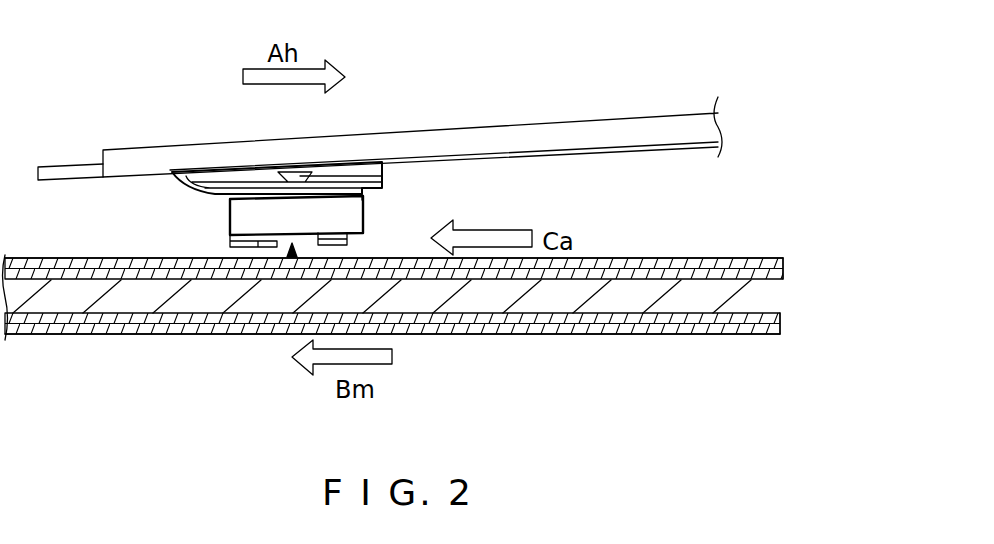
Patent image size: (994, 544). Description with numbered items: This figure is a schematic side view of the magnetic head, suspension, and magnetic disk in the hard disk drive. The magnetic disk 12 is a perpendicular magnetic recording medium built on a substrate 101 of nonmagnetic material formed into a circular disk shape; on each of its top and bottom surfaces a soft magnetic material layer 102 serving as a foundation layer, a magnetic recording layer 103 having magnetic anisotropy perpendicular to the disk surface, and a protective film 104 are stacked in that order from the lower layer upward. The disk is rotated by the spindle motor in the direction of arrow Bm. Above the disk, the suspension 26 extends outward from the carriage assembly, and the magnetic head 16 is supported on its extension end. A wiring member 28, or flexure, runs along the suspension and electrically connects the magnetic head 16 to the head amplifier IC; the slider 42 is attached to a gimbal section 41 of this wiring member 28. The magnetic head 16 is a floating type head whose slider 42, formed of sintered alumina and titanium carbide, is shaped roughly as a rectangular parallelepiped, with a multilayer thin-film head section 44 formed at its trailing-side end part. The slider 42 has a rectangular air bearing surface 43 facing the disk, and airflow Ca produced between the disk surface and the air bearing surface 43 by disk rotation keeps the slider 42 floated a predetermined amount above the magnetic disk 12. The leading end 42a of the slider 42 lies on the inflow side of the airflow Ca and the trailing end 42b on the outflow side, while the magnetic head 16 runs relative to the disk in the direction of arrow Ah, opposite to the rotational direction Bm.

The magnetic disk 12 is at (437, 282).
The magnetic head 16 is at (302, 238).
The suspension 26 is at (580, 120).
The wiring member (flexure) 28 is at (657, 155).
The gimbal section 41 is at (367, 177).
The slider 42 is at (290, 177).
The leading end 42a is at (367, 206).
The trailing end 42b is at (230, 233).
The air bearing surface (ABS) 43 is at (291, 260).
The head section 44 is at (240, 221).
The substrate 101 is at (671, 303).
The soft magnetic material layer 102 is at (783, 268).
The magnetic recording layer 103 is at (698, 257).
The protective film 104 is at (740, 237).